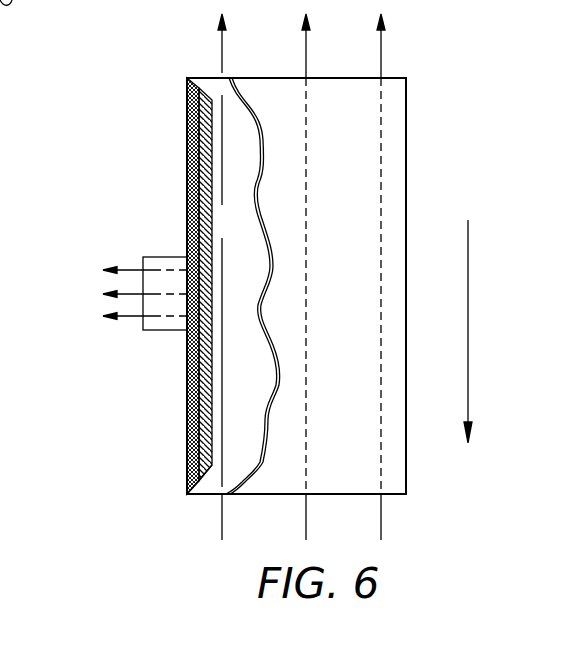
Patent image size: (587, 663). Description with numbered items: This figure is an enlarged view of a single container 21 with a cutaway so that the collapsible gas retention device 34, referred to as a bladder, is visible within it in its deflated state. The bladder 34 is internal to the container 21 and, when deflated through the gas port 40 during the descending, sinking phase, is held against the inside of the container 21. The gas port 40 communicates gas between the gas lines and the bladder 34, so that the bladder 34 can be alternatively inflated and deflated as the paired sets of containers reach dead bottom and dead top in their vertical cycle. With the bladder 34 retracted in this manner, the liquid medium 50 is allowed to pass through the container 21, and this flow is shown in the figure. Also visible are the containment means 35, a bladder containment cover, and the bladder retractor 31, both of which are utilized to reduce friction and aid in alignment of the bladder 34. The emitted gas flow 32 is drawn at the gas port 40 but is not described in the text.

The container 21 is at (408, 110).
The bladder retractor 31 is at (188, 148).
The collapsible gas retention device 34 is at (190, 442).
The containment means 35 is at (212, 213).
The gas port 40 is at (150, 257).
The emitted radiation 32 is at (124, 295).
The liquid medium 50 is at (381, 518).